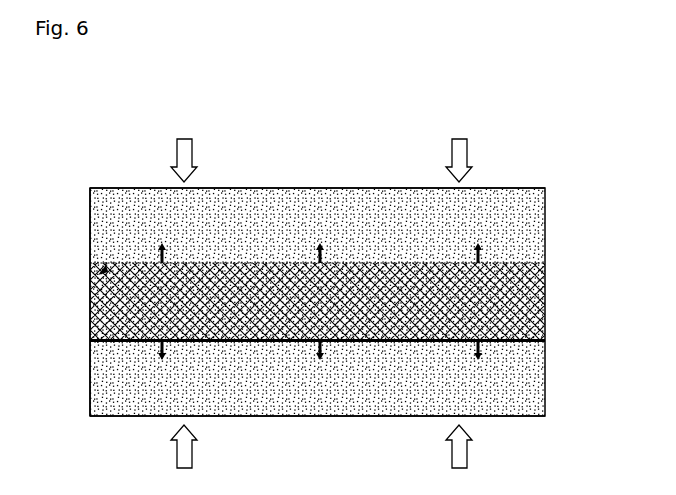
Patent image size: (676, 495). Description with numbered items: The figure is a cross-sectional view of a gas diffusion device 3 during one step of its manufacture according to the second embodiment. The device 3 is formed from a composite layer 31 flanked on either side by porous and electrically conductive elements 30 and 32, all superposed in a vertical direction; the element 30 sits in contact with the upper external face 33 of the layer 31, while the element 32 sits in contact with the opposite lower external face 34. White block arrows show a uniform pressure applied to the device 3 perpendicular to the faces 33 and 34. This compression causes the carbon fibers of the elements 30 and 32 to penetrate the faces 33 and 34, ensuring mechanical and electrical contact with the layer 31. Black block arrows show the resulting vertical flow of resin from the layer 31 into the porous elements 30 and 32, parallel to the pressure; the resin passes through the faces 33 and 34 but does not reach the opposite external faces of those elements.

The gas diffusion device 3 is at (509, 150).
The porous and electrically conductive element 30 is at (309, 234).
The composite layer 31 is at (309, 310).
The porous and electrically conductive element 32 is at (309, 393).
The upper external face 33 is at (89, 362).
The lower external face 34 is at (519, 350).